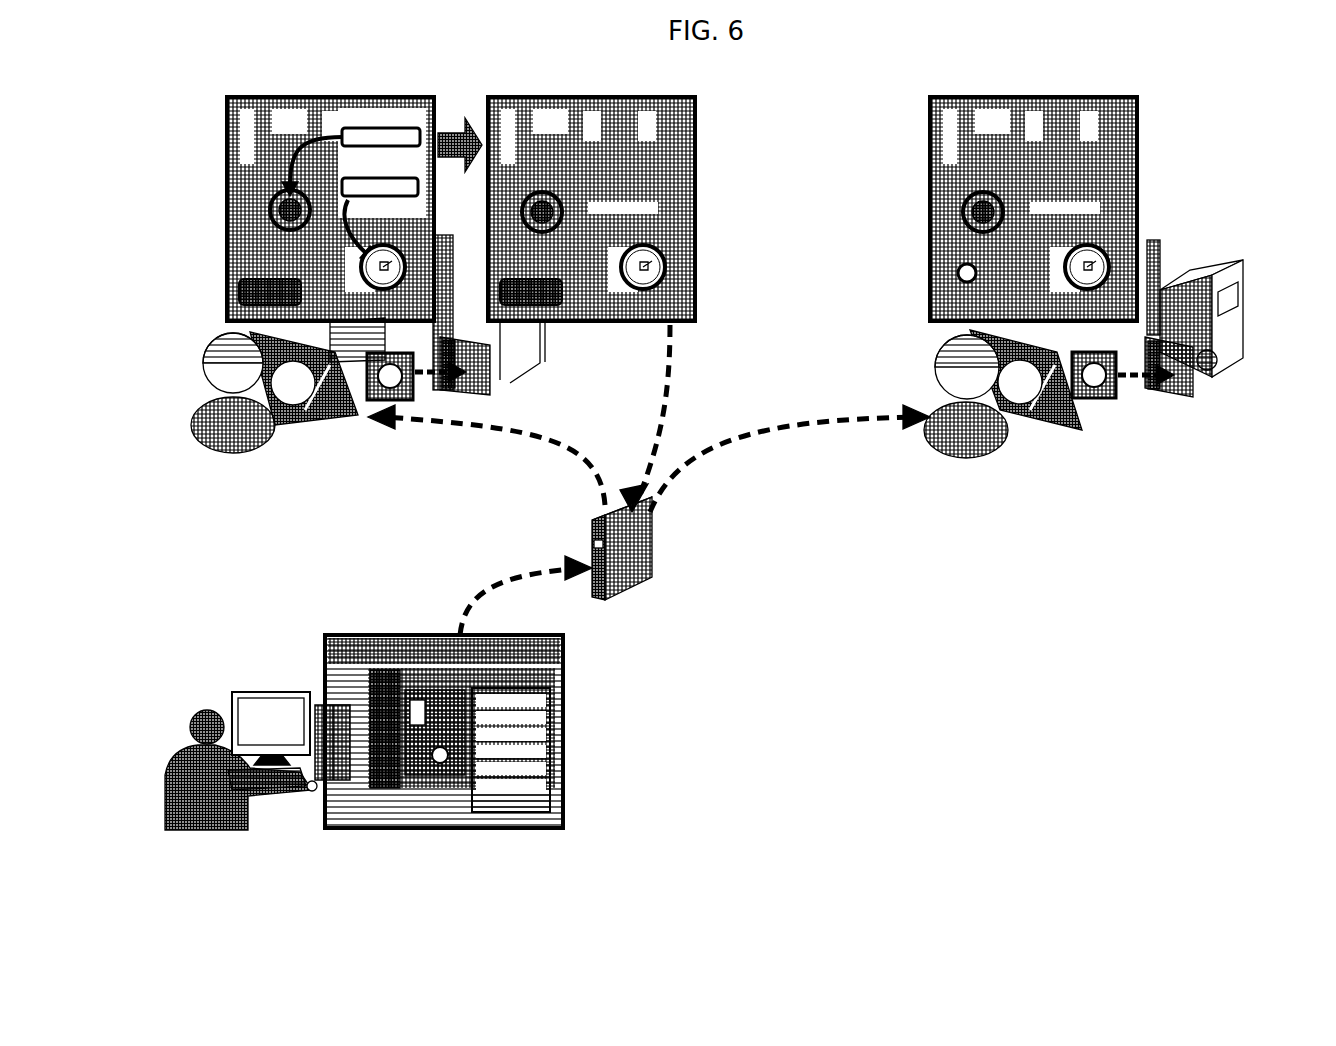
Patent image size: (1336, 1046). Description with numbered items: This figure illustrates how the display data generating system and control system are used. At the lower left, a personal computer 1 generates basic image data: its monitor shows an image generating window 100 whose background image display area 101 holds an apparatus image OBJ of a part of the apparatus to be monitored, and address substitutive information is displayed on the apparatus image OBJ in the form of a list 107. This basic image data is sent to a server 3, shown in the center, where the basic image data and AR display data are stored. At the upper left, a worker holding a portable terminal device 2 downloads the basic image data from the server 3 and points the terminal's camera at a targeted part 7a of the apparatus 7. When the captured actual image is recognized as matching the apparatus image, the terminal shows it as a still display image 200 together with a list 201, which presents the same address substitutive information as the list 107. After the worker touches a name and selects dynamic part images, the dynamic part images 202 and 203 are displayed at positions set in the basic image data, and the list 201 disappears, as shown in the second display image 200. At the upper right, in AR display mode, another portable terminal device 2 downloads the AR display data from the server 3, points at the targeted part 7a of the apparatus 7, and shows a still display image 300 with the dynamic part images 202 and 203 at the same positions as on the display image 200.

The personal computer 1 is at (278, 677).
The portable terminal device 2 is at (360, 428).
The server 3 is at (655, 548).
The apparatus 7 is at (548, 344).
The targeted part 7a is at (470, 362).
The image generating window 100 is at (479, 748).
The background image display area 101 is at (383, 778).
The list 107 is at (548, 797).
The apparatus image OBJ is at (438, 778).
The display image 200 is at (395, 95).
The list 201 is at (418, 112).
The dynamic part image 202 is at (280, 210).
The dynamic part image 203 is at (376, 272).
The display image 300 is at (1090, 96).